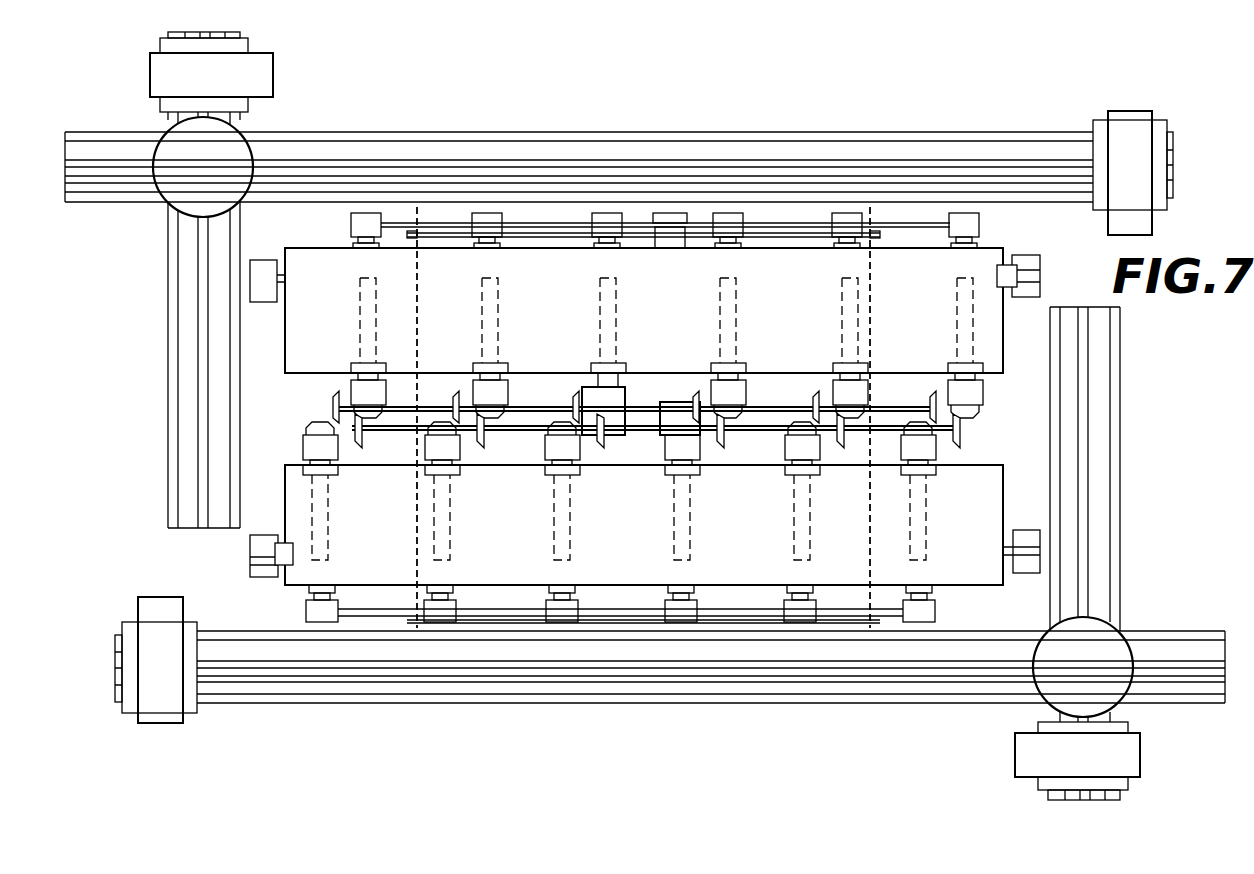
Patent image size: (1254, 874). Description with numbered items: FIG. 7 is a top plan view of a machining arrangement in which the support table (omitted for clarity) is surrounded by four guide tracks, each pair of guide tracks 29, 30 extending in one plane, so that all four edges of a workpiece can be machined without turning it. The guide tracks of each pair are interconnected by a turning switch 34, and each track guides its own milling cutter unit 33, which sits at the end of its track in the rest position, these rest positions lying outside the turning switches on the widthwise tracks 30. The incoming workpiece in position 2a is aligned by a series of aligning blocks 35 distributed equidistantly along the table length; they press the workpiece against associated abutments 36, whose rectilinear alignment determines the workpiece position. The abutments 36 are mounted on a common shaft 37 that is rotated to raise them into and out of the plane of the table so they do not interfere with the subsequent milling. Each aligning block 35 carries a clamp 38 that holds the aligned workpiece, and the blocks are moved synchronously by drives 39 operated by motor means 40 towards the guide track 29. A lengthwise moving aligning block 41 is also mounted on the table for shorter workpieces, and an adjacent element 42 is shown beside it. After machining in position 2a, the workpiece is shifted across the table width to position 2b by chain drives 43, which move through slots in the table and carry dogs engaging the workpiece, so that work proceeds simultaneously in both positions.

The incoming workpiece position 2a is at (648, 560).
The second workpiece position 2b is at (822, 280).
The guide track 29 is at (742, 160).
The widthwise guide track 30 is at (190, 272).
The milling cutter unit 33 is at (245, 76).
The turning switch 34 is at (192, 155).
The aligning block 35 is at (355, 380).
The abutment 36 is at (375, 218).
The common shaft 37 is at (565, 215).
The clamp 38 is at (362, 365).
The drive 39 is at (332, 415).
The motor means 40 is at (613, 410).
The lengthwise moving aligning block 41 is at (1010, 276).
The clamp 42 is at (1027, 273).
The chain drive 43 is at (423, 218).